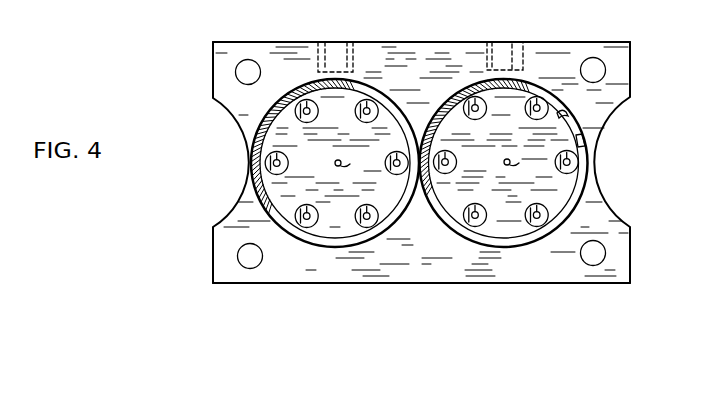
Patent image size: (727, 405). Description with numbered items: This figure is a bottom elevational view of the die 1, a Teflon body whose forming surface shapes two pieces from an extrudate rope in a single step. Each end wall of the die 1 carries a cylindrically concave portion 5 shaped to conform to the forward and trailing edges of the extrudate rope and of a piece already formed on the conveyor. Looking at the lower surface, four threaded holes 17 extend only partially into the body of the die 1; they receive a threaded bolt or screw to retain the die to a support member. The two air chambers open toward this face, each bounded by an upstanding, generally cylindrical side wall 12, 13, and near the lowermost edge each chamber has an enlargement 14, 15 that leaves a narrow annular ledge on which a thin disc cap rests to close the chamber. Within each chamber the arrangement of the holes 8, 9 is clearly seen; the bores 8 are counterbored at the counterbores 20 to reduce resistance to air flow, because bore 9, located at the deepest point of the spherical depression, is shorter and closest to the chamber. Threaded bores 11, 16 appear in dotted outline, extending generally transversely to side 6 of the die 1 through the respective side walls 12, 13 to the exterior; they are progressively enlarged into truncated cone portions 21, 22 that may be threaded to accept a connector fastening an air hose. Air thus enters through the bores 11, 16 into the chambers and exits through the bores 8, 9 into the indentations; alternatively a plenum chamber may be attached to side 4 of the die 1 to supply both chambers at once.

The die 1 is at (439, 162).
The side 4 is at (457, 283).
The cylindrically concave portion 5 is at (599, 137).
The side 6 is at (423, 42).
The bores 8 is at (362, 212).
The bore 9 is at (434, 162).
The threaded bore 11 is at (323, 42).
The side wall 12 is at (393, 117).
The side wall 13 is at (557, 117).
The enlargement 14 is at (579, 141).
The enlargement 15 is at (360, 241).
The threaded bore 16 is at (510, 45).
The threaded holes 17 is at (603, 68).
The counterbores 20 is at (272, 170).
The truncated cone portion 21 is at (338, 37).
The truncated cone portion 22 is at (508, 37).